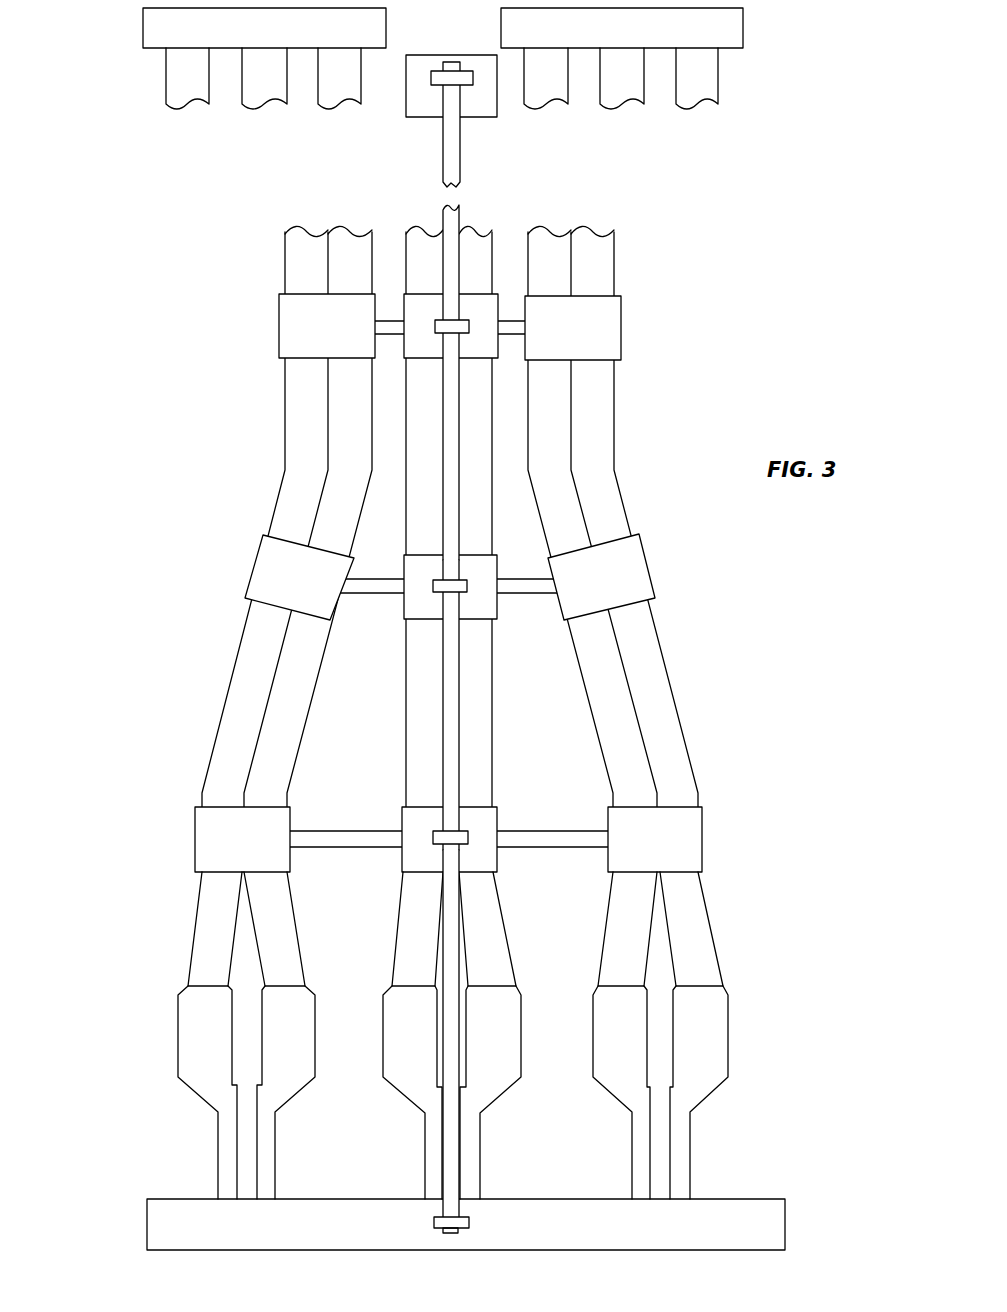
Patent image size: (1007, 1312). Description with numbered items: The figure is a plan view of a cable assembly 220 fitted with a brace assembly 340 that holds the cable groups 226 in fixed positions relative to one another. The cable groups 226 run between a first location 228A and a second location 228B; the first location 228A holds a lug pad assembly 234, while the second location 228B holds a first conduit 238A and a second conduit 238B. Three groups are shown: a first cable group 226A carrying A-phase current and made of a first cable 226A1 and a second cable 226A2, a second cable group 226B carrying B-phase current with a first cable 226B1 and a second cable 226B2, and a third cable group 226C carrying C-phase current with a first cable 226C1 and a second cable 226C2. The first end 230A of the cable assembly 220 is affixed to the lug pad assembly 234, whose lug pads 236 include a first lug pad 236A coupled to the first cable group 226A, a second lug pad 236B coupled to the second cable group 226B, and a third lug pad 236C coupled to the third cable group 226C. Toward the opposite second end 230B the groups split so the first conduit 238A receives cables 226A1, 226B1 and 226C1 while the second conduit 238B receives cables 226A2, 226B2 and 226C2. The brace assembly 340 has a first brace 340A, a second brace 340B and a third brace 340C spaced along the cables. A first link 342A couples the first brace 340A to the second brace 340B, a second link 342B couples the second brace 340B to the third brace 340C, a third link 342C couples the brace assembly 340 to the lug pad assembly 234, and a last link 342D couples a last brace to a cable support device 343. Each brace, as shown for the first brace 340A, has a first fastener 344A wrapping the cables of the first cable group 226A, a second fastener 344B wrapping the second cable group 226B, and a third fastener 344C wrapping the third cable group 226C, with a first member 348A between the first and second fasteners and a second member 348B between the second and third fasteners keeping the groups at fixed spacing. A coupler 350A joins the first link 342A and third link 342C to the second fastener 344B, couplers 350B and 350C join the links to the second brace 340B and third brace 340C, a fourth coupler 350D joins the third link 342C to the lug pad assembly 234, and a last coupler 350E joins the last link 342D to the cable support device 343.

The cable assembly 220 is at (453, 649).
The cable groups 226 is at (445, 427).
The first cable group 226A is at (360, 427).
The second cable group 226B is at (427, 427).
The third cable group 226C is at (541, 427).
The first cable 226A1 is at (165, 85).
The second cable 226A2 is at (543, 112).
The first cable 226B1 is at (248, 108).
The second cable 226B2 is at (607, 113).
The first cable 226C1 is at (330, 110).
The second cable 226C2 is at (720, 77).
The first location 228A is at (459, 1061).
The second location 228B is at (682, 95).
The first end 230A is at (492, 1035).
The second end 230B is at (251, 37).
The lug pad assembly 234 is at (755, 1199).
The lug pads 236 is at (467, 1035).
The first lug pad 236A is at (245, 1142).
The second lug pad 236B is at (440, 1142).
The third lug pad 236C is at (662, 1165).
The first conduit 238A is at (387, 28).
The second conduit 238B is at (745, 28).
The brace assembly 340 is at (437, 584).
The first brace 340A is at (437, 841).
The second brace 340B is at (252, 561).
The third brace 340C is at (278, 314).
The first link 342A is at (462, 688).
The second link 342B is at (459, 485).
The third link 342C is at (460, 968).
The last link 342D is at (462, 163).
The cable support device 343 is at (465, 118).
The first fastener 344A is at (196, 860).
The second fastener 344B is at (400, 860).
The third fastener 344C is at (702, 840).
The first member 348A is at (385, 830).
The second member 348B is at (597, 830).
The coupler 350A is at (470, 837).
The coupler 350B is at (468, 590).
The coupler 350C is at (469, 327).
The fourth coupler 350D is at (469, 1222).
The last coupler 350E is at (430, 80).